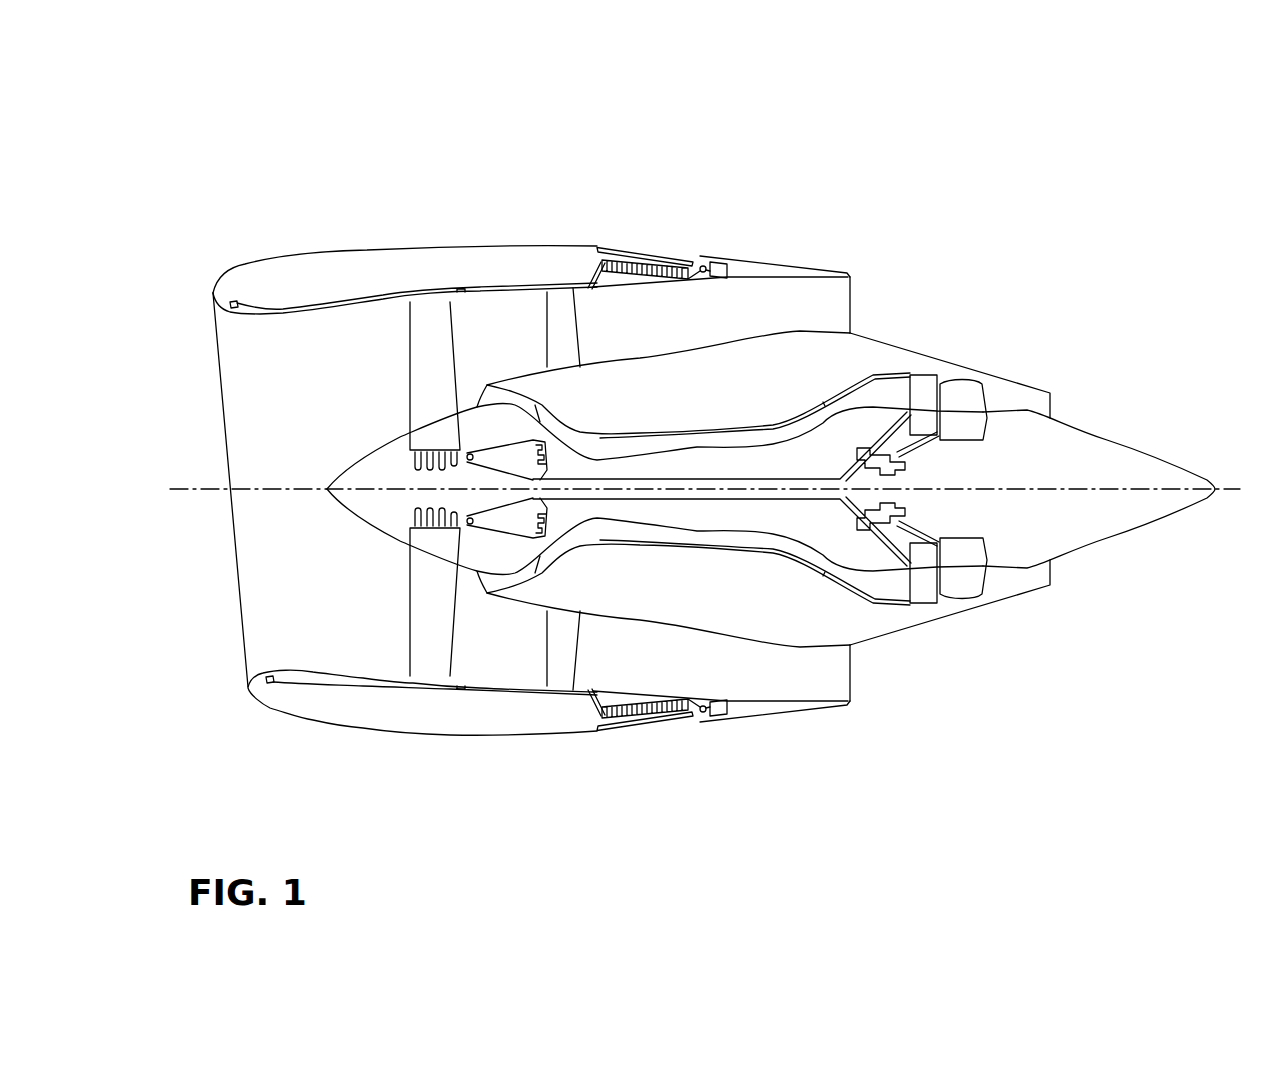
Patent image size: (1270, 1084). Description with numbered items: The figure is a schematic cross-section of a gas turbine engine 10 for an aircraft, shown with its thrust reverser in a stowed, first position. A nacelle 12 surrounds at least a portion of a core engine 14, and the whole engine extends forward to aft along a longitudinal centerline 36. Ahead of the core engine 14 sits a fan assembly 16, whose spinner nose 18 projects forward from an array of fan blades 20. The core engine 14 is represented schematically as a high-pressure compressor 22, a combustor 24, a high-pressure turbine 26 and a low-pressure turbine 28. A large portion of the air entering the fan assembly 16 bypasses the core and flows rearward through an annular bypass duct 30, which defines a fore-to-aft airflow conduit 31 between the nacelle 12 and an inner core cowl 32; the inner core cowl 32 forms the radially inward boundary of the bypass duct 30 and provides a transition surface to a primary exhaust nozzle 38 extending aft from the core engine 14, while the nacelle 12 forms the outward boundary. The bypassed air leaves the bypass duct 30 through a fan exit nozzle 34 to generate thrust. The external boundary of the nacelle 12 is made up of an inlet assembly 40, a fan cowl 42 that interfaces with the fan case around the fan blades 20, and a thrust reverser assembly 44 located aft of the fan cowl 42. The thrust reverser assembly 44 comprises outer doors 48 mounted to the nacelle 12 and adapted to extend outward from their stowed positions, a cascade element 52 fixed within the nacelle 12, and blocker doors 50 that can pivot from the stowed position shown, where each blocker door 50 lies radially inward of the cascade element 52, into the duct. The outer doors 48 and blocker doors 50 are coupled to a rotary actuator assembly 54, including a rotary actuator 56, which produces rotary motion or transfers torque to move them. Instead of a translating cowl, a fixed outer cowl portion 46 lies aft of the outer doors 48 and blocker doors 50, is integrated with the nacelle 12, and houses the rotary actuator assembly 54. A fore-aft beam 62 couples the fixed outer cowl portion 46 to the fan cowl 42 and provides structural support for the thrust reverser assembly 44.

The gas turbine engine 10 is at (698, 470).
The nacelle 12 is at (390, 417).
The core engine 14 is at (882, 615).
The fan assembly 16 is at (325, 615).
The spinner nose 18 is at (358, 512).
The fan blades 20 is at (415, 352).
The high-pressure compressor 22 is at (598, 445).
The combustor 24 is at (757, 442).
The high-pressure turbine 26 is at (807, 548).
The low-pressure turbine 28 is at (883, 393).
The bypass duct 30 is at (502, 347).
The fore-to-aft airflow conduit 31 is at (725, 470).
The inner core cowl 32 is at (752, 333).
The fan exit nozzle 34 is at (875, 298).
The centerline 36 is at (211, 494).
The primary exhaust nozzle 38 is at (1000, 370).
The inlet assembly 40 is at (310, 252).
The fan cowl 42 is at (513, 245).
The thrust reverser assembly 44 is at (617, 226).
The fixed outer cowl portion 46 is at (765, 262).
The outer doors 48 is at (643, 250).
The blocker doors 50 is at (630, 287).
The cascade element 52 is at (663, 266).
The rotary actuator assembly 54 is at (723, 258).
The rotary actuator 56 is at (705, 719).
The fore-aft beam 62 is at (790, 721).